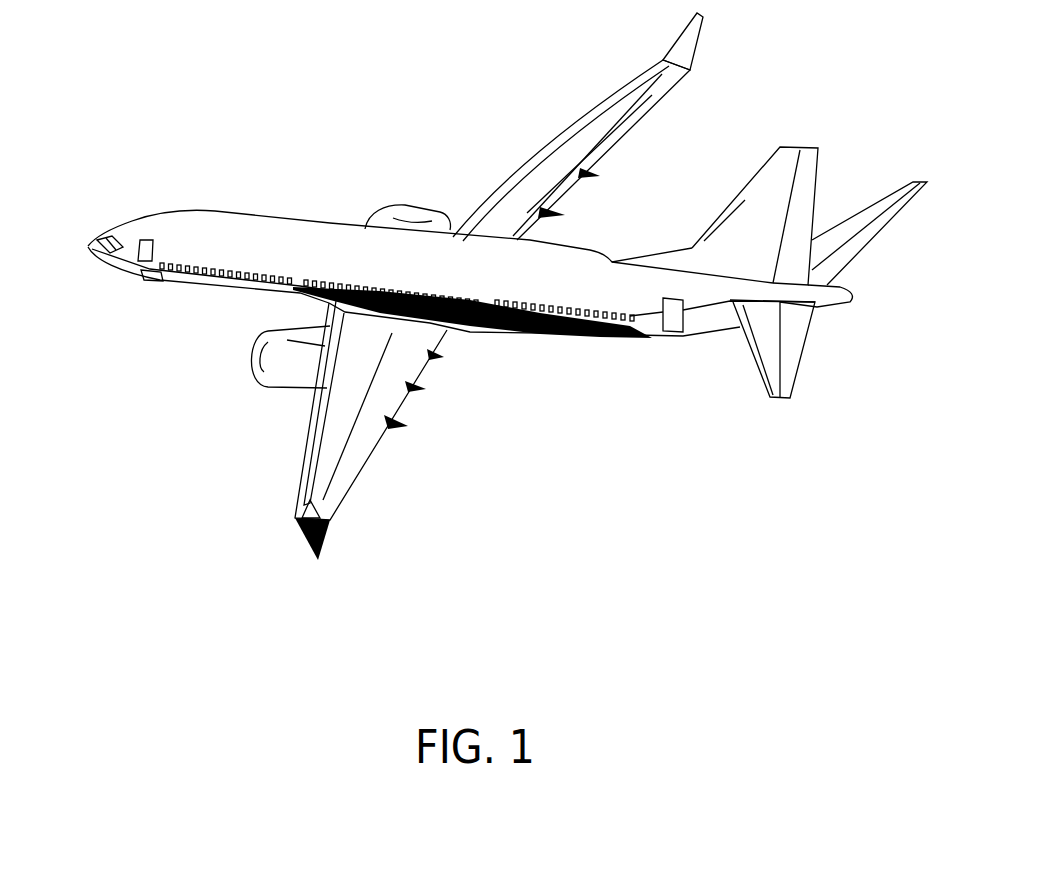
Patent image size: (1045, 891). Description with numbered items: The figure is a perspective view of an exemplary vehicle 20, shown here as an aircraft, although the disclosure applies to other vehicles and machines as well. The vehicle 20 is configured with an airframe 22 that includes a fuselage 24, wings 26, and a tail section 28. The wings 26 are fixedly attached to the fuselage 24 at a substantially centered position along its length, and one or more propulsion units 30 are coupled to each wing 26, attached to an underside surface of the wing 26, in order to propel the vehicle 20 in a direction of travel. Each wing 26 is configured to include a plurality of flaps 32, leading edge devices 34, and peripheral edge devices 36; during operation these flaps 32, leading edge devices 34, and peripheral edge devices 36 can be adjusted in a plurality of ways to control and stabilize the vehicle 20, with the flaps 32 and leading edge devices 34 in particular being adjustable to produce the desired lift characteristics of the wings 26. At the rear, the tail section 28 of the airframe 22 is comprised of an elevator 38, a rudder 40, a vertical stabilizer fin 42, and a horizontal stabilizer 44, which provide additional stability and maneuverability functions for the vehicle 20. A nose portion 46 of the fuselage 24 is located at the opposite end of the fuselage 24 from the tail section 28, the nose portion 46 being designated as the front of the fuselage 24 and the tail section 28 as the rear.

The vehicle 20 is at (213, 100).
The airframe 22 is at (540, 435).
The fuselage 24 is at (237, 245).
The wings 26 is at (333, 460).
The tail section 28 is at (856, 117).
The propulsion units 30 is at (285, 365).
The flaps 32 is at (366, 432).
The leading edge devices 34 is at (310, 462).
The peripheral edge devices 36 is at (690, 60).
The elevator 38 is at (865, 238).
The rudder 40 is at (815, 183).
The vertical stabilizer fin 42 is at (760, 198).
The horizontal stabilizer 44 is at (763, 370).
The nose portion 46 is at (97, 248).